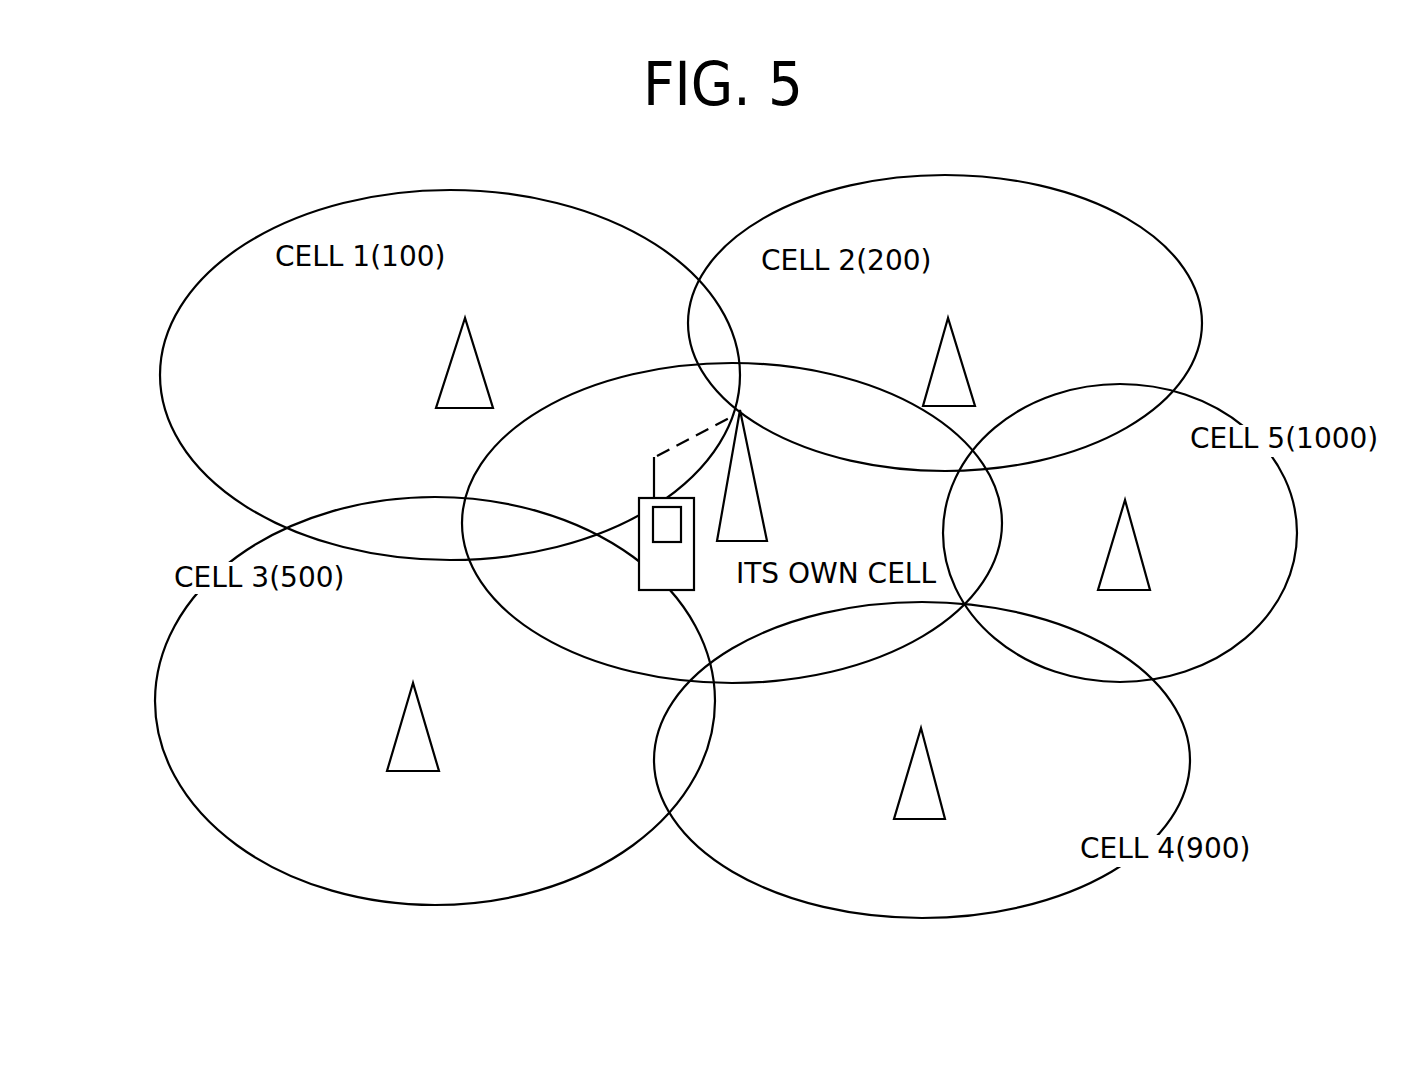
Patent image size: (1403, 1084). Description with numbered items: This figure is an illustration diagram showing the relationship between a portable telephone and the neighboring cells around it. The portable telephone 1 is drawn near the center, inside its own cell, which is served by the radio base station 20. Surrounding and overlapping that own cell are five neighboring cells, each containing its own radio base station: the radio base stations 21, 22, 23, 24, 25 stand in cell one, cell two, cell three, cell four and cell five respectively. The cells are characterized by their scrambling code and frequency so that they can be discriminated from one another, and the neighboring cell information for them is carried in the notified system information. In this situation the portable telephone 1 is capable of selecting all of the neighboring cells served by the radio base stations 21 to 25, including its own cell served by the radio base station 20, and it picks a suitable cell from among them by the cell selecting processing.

The portable telephone 1 is at (685, 575).
The radio base station 20 is at (757, 520).
The radio base station 21 is at (466, 376).
The radio base station 22 is at (952, 370).
The radio base station 23 is at (416, 739).
The radio base station 24 is at (927, 781).
The radio base station 25 is at (1128, 560).